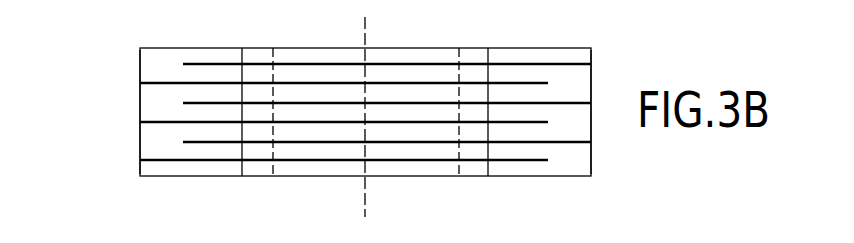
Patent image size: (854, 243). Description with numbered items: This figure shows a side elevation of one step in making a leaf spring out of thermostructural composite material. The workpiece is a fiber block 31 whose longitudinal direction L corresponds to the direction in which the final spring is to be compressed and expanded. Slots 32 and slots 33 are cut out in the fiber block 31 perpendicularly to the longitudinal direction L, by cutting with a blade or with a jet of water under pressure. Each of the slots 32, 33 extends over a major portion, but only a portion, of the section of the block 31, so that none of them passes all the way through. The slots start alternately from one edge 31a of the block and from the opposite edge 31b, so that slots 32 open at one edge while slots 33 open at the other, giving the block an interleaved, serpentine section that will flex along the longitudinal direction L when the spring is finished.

The fiber block 31 is at (98, 102).
The edge of the fiber block 31a is at (591, 80).
The opposite edge of the fiber block 31b is at (140, 140).
The slots 32 is at (226, 63).
The slots 33 is at (502, 160).
The longitudinal direction L is at (366, 33).